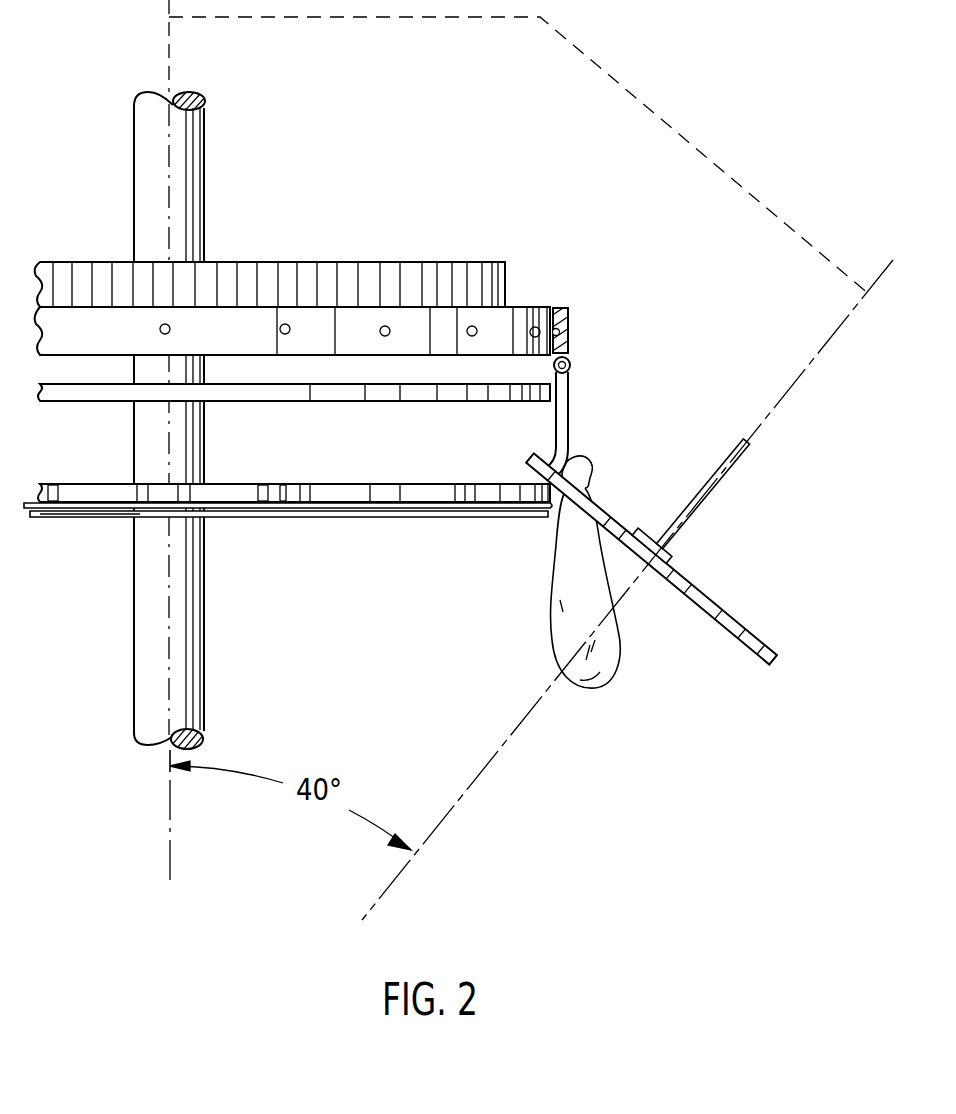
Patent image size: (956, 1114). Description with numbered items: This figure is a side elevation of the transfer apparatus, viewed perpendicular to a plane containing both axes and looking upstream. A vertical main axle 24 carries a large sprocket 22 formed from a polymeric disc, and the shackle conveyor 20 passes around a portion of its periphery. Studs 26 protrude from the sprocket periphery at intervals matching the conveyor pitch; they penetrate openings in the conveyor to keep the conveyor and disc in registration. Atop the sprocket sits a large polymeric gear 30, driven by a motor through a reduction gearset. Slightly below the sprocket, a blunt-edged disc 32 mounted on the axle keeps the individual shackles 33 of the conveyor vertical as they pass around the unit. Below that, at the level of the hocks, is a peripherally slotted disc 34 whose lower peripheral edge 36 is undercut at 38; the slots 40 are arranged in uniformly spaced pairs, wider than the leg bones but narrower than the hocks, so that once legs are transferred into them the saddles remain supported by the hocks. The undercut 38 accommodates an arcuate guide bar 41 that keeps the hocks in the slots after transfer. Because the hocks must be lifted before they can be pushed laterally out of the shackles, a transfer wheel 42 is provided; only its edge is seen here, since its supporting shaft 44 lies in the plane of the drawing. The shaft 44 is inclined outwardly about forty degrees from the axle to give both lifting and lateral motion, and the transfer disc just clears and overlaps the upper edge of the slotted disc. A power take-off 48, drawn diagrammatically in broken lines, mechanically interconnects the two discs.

The conveyor 20 is at (566, 306).
The sprocket 22 is at (108, 338).
The main axle 24 is at (203, 178).
The studs 26 is at (385, 337).
The polymeric gear 30 is at (507, 272).
The blunt-edged disc 32 is at (38, 392).
The shackles 33 is at (569, 402).
The slotted disc 34 is at (352, 484).
The lower peripheral edge 36 is at (508, 486).
The undercut 38 is at (492, 518).
The slots 40 is at (58, 484).
The guide bar 41 is at (108, 516).
The transfer wheel 42 is at (780, 662).
The shaft 44 is at (733, 480).
The power take-off 48 is at (726, 166).